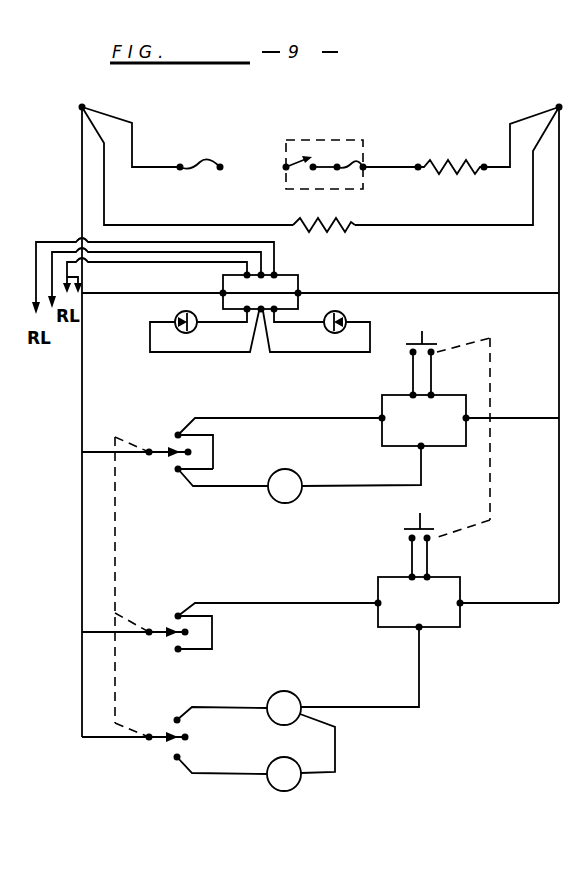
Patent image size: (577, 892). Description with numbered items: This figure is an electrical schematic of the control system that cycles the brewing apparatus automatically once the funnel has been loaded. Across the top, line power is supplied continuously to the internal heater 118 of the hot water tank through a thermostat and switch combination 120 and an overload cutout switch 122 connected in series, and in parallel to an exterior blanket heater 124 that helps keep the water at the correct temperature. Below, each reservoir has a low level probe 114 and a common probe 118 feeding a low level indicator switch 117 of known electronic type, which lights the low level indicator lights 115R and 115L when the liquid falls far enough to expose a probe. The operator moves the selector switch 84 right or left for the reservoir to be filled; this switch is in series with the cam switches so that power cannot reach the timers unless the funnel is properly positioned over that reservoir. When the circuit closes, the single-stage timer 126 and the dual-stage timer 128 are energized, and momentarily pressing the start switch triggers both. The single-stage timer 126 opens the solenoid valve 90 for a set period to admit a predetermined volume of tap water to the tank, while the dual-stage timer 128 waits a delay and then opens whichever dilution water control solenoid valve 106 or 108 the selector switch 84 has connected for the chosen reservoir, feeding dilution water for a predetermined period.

The low level probe 114 is at (46, 252).
The internal heater / common probe 118 is at (455, 167).
The thermostat and switch combination 120 is at (315, 140).
The overload cutout switch 122 is at (200, 161).
The exterior blanket heater 124 is at (350, 223).
The low level indicator switch 117 is at (298, 284).
The right low level indicator light 115R is at (177, 316).
The left low level indicator light 115L is at (345, 316).
The single-stage timer 126 is at (381, 405).
The dual-stage timer 128 is at (378, 590).
The selector switch 84 is at (147, 450).
The solenoid valve 90 is at (286, 469).
The dilution water control solenoid valve 106 is at (287, 690).
The dilution water control solenoid valve 108 is at (299, 780).